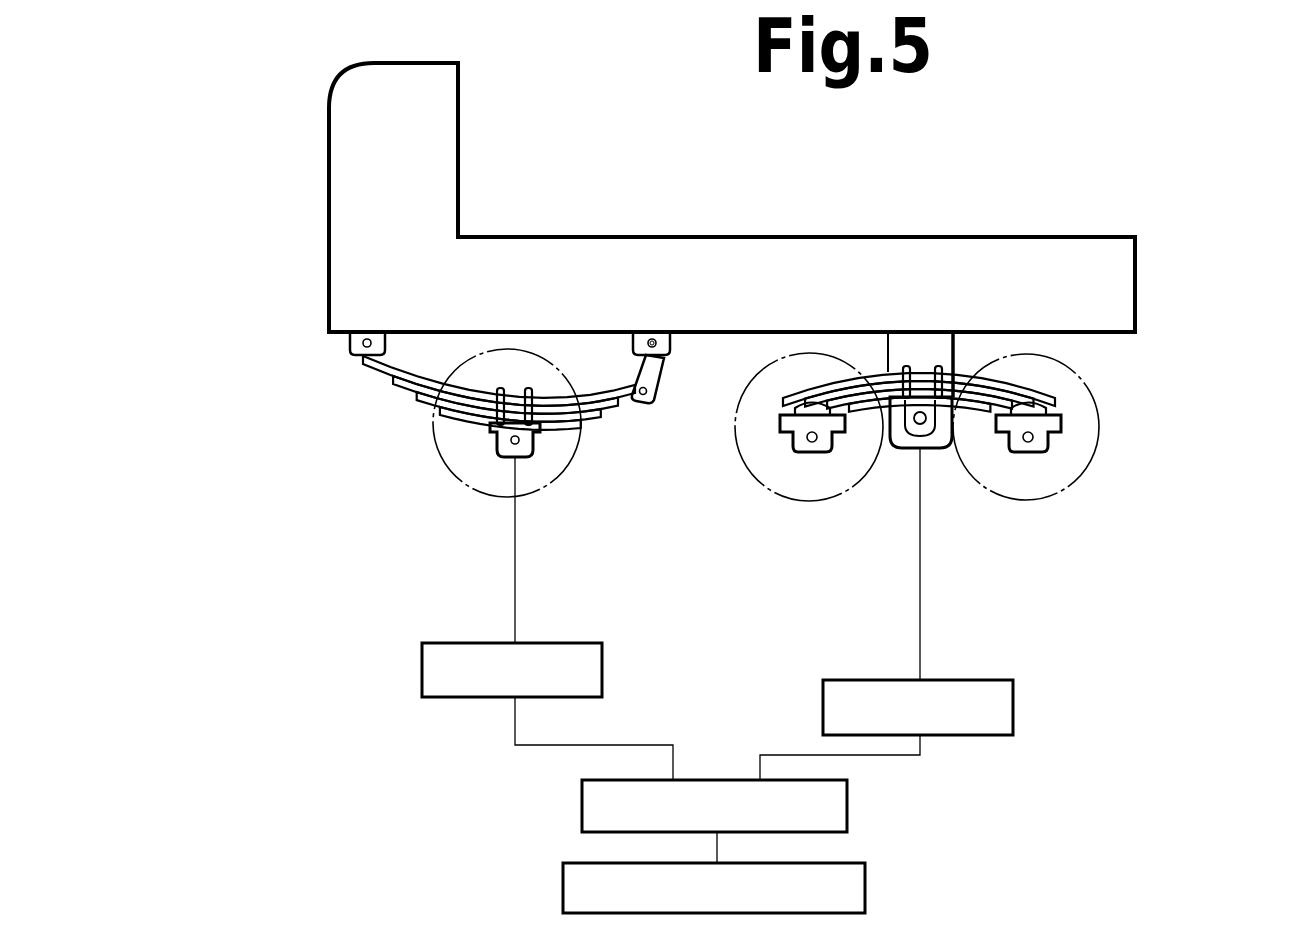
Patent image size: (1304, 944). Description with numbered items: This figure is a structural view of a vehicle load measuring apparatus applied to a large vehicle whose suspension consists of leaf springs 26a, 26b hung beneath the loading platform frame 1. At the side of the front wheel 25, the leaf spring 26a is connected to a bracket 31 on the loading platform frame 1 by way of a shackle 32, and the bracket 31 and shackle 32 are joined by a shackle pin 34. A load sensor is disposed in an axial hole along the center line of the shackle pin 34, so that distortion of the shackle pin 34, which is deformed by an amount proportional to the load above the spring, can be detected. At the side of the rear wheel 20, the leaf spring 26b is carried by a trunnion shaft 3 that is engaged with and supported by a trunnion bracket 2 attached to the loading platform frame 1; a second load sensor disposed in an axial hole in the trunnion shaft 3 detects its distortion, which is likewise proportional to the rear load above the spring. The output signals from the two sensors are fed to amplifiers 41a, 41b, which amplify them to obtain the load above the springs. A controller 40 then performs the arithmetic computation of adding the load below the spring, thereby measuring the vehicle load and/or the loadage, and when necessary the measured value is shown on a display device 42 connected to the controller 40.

The loading platform frame 1 is at (380, 198).
The trunnion bracket 2 is at (946, 442).
The trunnion shaft 3 is at (915, 430).
The rear wheel 20 is at (770, 504).
The front wheel 25 is at (485, 519).
The leaf spring 26a is at (412, 403).
The leaf spring 26b is at (958, 390).
The bracket 31 is at (358, 356).
The shackle 32 is at (660, 390).
The shackle pin 34 is at (641, 333).
The controller 40 is at (847, 802).
The amplifier 41a is at (460, 697).
The amplifier 41b is at (1013, 708).
The display device 42 is at (865, 885).